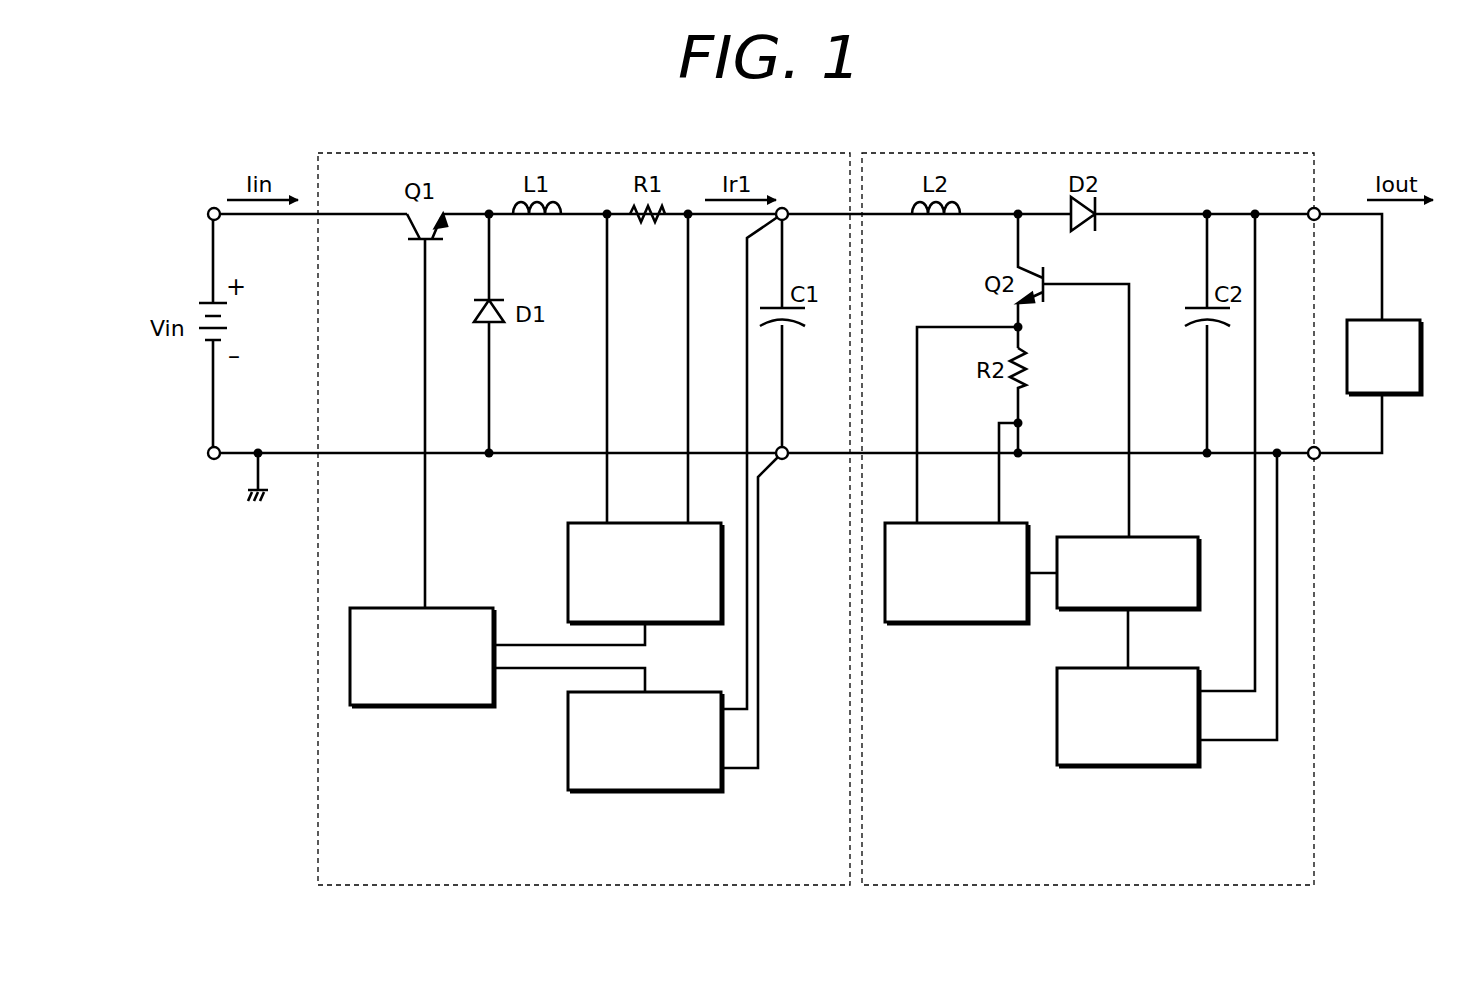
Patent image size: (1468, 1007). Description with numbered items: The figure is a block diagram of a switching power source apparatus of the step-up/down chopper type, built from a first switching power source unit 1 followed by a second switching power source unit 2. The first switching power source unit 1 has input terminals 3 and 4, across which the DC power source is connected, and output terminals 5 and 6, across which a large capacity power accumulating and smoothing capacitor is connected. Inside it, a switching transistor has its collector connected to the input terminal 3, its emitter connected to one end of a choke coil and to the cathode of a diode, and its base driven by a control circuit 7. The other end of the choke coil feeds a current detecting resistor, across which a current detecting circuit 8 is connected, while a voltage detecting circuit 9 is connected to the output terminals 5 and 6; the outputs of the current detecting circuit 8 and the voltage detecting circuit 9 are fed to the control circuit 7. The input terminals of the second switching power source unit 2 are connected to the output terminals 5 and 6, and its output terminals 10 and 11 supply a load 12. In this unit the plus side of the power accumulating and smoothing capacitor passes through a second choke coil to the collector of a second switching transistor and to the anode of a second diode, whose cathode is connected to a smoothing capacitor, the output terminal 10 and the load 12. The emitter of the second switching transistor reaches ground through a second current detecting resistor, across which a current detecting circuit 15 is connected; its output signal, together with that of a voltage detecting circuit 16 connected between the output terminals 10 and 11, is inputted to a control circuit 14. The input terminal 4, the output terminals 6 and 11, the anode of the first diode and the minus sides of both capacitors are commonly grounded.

The first switching power source unit 1 is at (397, 153).
The second switching power source unit 2 is at (1275, 153).
The input terminal 3 is at (208, 218).
The input terminal 4 is at (208, 452).
The output terminal 5 is at (787, 207).
The output terminal 6 is at (786, 460).
The control circuit 7 is at (384, 607).
The current detecting circuit 8 is at (590, 523).
The voltage detecting circuit 9 is at (602, 790).
The output terminal 10 is at (1318, 208).
The output terminal 11 is at (1318, 460).
The load 12 is at (1385, 318).
The control circuit 14 is at (1150, 537).
The current detecting circuit 15 is at (983, 622).
The voltage detecting circuit 16 is at (1162, 765).